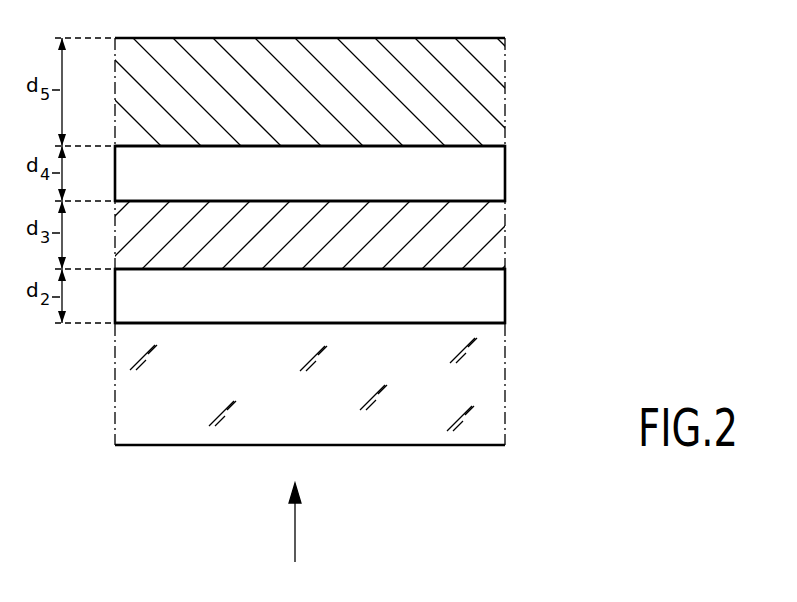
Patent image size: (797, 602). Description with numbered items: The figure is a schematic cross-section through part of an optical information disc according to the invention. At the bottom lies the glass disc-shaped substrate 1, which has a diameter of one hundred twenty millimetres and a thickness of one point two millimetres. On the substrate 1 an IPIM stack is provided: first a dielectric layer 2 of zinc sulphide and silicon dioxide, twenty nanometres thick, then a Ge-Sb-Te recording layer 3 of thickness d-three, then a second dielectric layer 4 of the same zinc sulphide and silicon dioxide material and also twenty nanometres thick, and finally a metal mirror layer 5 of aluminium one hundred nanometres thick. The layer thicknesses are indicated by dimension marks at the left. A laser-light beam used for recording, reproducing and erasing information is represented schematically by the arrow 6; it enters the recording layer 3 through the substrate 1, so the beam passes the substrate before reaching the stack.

The glass disc-shaped substrate 1 is at (479, 382).
The dielectric layer 2 is at (479, 299).
The recording layer 3 is at (479, 238).
The dielectric layer 4 is at (479, 174).
The metal mirror layer 5 is at (479, 90).
The arrow 6 is at (297, 532).